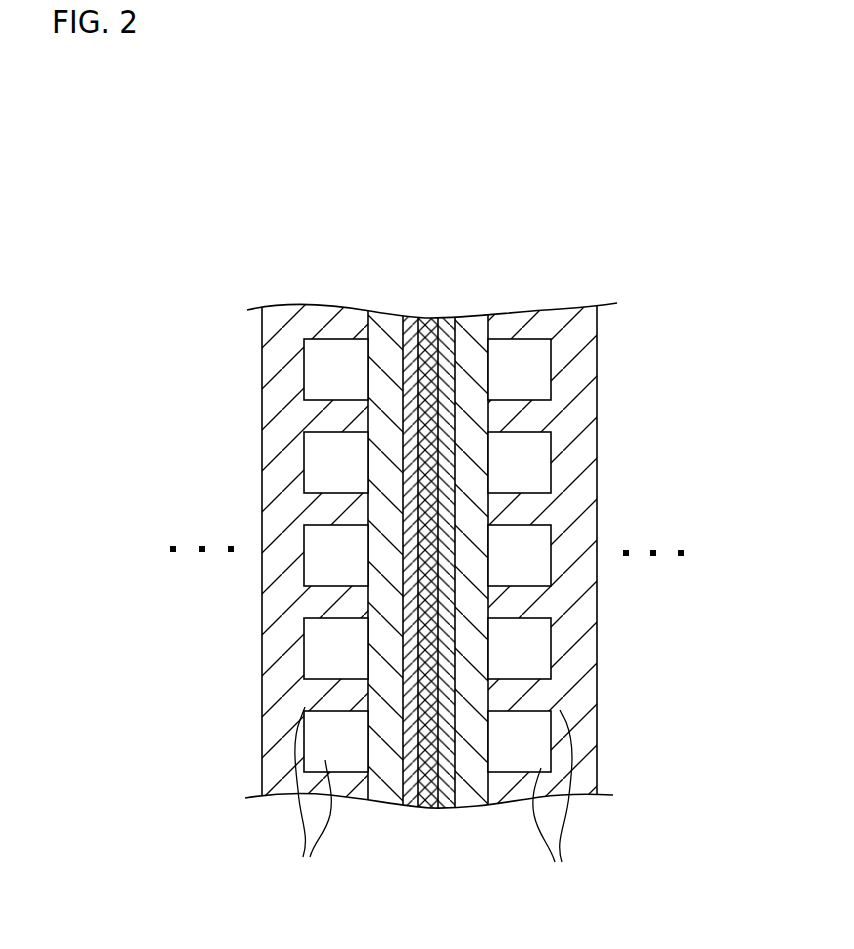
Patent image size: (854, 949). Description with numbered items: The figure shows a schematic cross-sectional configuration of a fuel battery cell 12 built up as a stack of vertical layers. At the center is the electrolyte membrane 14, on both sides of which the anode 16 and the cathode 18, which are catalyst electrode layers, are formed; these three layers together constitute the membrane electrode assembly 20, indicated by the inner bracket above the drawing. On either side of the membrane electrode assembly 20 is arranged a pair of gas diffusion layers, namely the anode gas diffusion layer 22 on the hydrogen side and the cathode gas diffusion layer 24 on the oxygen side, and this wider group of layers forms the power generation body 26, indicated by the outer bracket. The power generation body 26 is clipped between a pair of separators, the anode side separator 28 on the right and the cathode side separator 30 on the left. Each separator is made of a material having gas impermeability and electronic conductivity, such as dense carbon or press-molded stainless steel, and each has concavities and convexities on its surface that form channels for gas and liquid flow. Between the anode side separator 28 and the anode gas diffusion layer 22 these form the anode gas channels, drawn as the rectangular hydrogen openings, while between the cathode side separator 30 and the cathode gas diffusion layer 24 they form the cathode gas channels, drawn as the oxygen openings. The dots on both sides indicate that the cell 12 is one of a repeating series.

The fuel battery cell 12 is at (629, 225).
The electrolyte membrane 14 is at (428, 322).
The anode 16 is at (446, 323).
The cathode 18 is at (412, 327).
The membrane electrode assembly 20 is at (432, 501).
The anode gas diffusion layer 22 is at (485, 521).
The cathode gas diffusion layer 24 is at (387, 327).
The power generation body 26 is at (426, 478).
The anode side separator 28 is at (535, 325).
The cathode side separator 30 is at (307, 318).